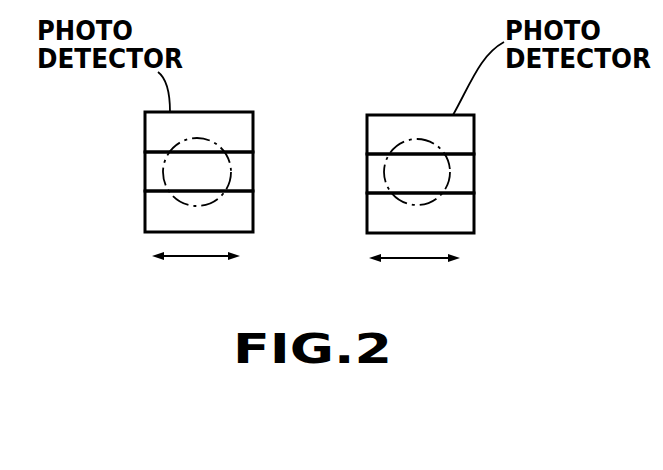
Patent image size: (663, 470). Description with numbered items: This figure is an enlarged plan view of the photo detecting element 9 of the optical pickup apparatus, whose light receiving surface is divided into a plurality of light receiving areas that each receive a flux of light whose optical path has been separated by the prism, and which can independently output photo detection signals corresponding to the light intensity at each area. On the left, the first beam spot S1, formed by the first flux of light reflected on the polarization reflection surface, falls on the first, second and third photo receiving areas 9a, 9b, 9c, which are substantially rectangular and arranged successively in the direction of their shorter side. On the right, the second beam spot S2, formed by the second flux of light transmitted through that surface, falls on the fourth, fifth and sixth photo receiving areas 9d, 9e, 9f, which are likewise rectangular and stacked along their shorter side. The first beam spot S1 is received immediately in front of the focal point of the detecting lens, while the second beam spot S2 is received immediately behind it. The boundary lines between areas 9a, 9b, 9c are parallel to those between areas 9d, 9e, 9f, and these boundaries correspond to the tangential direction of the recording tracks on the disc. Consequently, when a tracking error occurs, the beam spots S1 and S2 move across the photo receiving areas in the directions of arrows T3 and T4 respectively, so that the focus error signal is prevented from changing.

The photo detecting element 9 is at (336, 103).
The first photo receiving area 9a is at (145, 129).
The second photo receiving area 9b is at (145, 170).
The third photo receiving area 9c is at (145, 209).
The fourth photo receiving area 9d is at (474, 120).
The fifth photo receiving area 9e is at (474, 168).
The sixth photo receiving area 9f is at (474, 216).
The first beam spot S1 is at (215, 140).
The second beam spot S2 is at (433, 138).
The arrow indicating beam spot movement direction T3 is at (196, 276).
The arrow indicating beam spot movement direction T4 is at (414, 276).